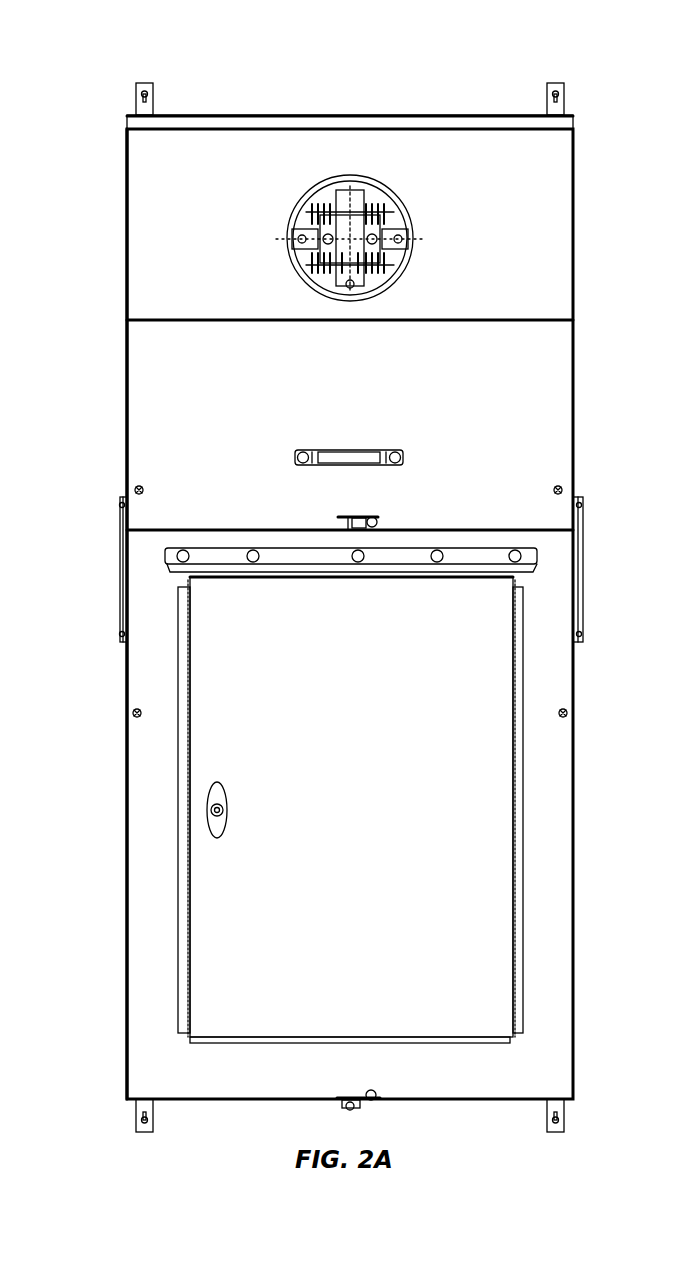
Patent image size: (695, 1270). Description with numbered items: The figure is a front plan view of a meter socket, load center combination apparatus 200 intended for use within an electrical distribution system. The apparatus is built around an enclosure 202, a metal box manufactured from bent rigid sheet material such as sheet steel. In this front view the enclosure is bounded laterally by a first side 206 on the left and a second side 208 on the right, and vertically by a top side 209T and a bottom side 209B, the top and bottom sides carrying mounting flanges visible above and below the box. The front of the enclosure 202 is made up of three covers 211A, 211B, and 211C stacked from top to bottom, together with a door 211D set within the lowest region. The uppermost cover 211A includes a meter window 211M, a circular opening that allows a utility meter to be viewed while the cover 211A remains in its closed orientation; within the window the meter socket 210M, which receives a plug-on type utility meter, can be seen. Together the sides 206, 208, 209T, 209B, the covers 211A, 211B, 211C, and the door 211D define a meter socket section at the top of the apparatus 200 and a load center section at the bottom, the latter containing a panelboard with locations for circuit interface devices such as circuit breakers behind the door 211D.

The meter socket, load center combination apparatus 200 is at (468, 85).
The enclosure 202 is at (127, 302).
The top side 209T is at (347, 112).
The bottom side 209B is at (478, 1095).
The meter socket 210M is at (337, 188).
The meter window 211M is at (287, 212).
The cover 211A is at (340, 185).
The cover 211B is at (517, 383).
The cover 211C is at (346, 795).
The door 211D is at (230, 917).
The first side 206 is at (128, 768).
The second side 208 is at (568, 769).